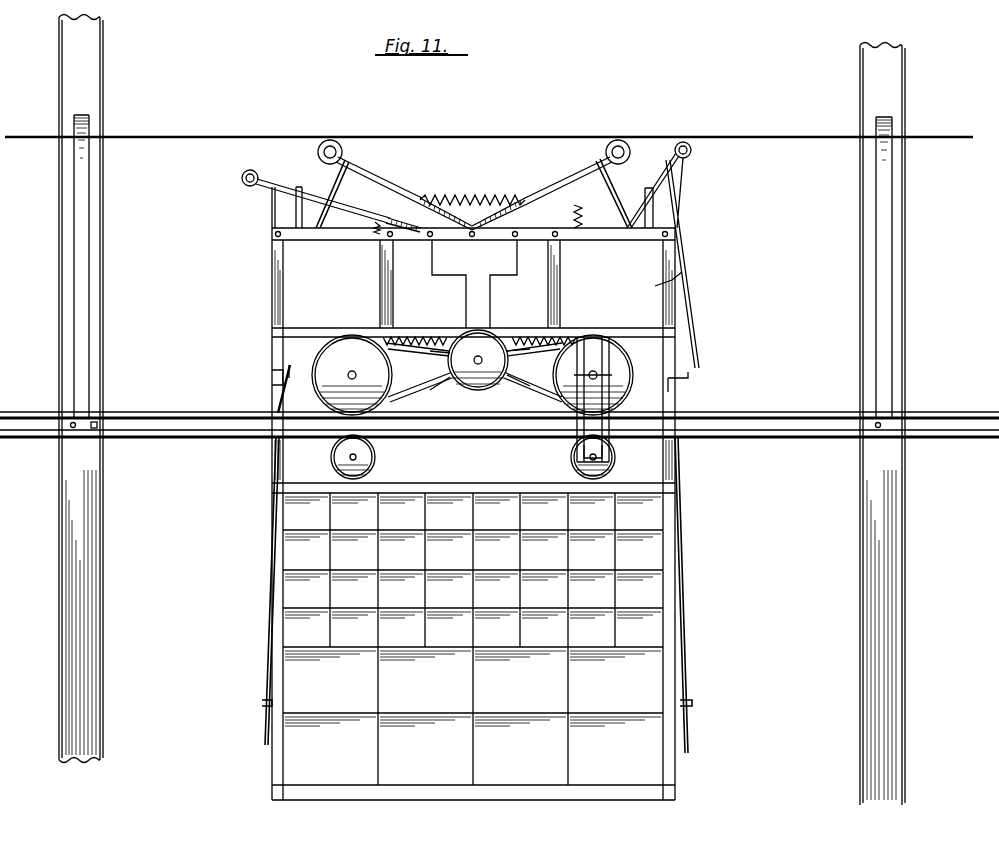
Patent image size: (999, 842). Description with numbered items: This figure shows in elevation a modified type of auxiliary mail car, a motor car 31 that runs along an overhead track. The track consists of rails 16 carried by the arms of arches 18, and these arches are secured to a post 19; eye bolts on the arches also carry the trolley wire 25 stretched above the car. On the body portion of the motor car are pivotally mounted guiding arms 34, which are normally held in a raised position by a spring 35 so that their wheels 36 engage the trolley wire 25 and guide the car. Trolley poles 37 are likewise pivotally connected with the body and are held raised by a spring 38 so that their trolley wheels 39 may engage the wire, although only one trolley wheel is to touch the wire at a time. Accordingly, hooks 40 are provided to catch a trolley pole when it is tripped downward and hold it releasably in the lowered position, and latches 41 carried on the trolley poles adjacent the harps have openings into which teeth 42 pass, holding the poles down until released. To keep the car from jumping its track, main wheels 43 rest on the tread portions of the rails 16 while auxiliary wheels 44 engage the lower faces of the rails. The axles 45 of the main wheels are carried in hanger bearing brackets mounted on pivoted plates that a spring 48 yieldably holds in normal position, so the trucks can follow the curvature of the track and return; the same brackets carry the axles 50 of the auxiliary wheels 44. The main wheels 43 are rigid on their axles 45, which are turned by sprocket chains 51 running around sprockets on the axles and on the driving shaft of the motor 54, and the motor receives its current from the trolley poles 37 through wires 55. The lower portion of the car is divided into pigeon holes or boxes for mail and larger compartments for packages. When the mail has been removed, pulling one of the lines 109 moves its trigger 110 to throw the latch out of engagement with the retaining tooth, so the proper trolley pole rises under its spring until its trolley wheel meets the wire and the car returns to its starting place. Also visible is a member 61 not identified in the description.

The rails 16 is at (755, 412).
The arches 18 is at (89, 318).
The post 19 is at (100, 280).
The trolley wire 25 is at (210, 137).
The motor car 31 is at (640, 258).
The guiding arms 34 is at (395, 178).
The spring 35 is at (480, 192).
The wheels 36 is at (335, 142).
The trolley poles 37 is at (285, 185).
The spring 38 is at (372, 232).
The trolley wheels 39 is at (246, 188).
The hooks 40 is at (653, 200).
The latches 41 is at (272, 222).
The teeth 42 is at (272, 290).
The main wheels 43 is at (420, 398).
The auxiliary wheels 44 is at (370, 455).
The axles 45 is at (352, 371).
The spring 48 is at (422, 335).
The axles 50 is at (332, 456).
The sprocket chains 51 is at (448, 393).
The motor 54 is at (478, 390).
The wires 55 is at (505, 268).
The belt 61 is at (525, 392).
The lines 109 is at (267, 625).
The trigger 110 is at (288, 362).